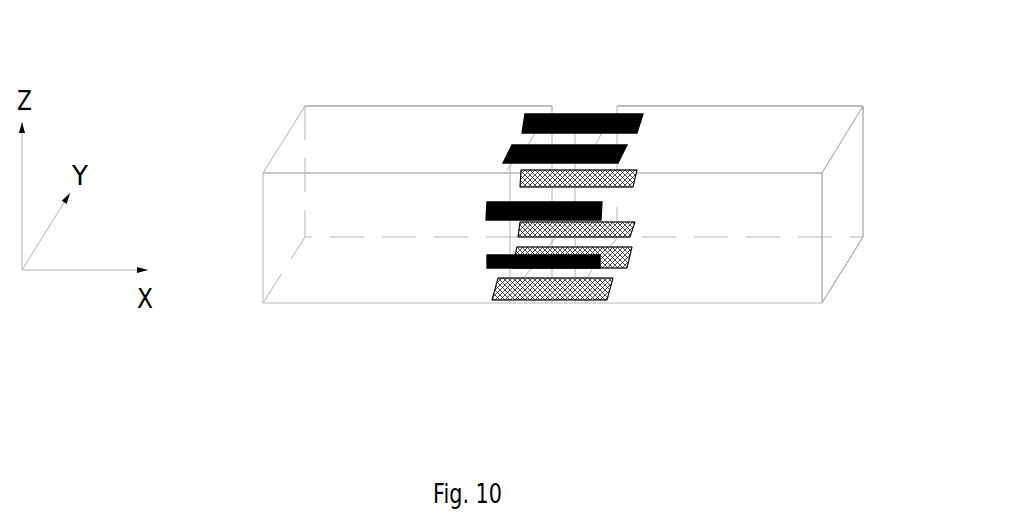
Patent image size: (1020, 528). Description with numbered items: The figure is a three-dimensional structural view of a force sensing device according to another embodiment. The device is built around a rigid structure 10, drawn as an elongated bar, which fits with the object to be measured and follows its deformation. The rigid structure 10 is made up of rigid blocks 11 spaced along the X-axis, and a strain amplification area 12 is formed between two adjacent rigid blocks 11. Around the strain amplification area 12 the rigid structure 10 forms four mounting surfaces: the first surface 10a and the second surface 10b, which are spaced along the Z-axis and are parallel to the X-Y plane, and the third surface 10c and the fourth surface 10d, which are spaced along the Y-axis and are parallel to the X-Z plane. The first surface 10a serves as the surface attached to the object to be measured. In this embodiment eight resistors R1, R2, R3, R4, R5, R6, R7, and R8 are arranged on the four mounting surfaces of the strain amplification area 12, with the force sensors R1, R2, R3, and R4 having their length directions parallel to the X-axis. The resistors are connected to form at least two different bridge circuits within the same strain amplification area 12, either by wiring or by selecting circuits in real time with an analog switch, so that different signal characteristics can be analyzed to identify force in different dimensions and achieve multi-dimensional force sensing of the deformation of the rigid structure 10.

The rigid structure 10 is at (343, 107).
The first surface 10a is at (807, 138).
The second surface 10b is at (837, 258).
The third surface 10c is at (797, 220).
The fourth surface 10d is at (835, 200).
The rigid blocks 11 is at (427, 110).
The strain amplification area 12 is at (583, 108).
The force sensor R1 is at (548, 156).
The force sensor R2 is at (568, 291).
The force sensor R3 is at (590, 261).
The force sensor R4 is at (565, 124).
The resistor R5 is at (526, 212).
The resistor R6 is at (525, 263).
The resistor R7 is at (594, 231).
The resistor R8 is at (596, 178).